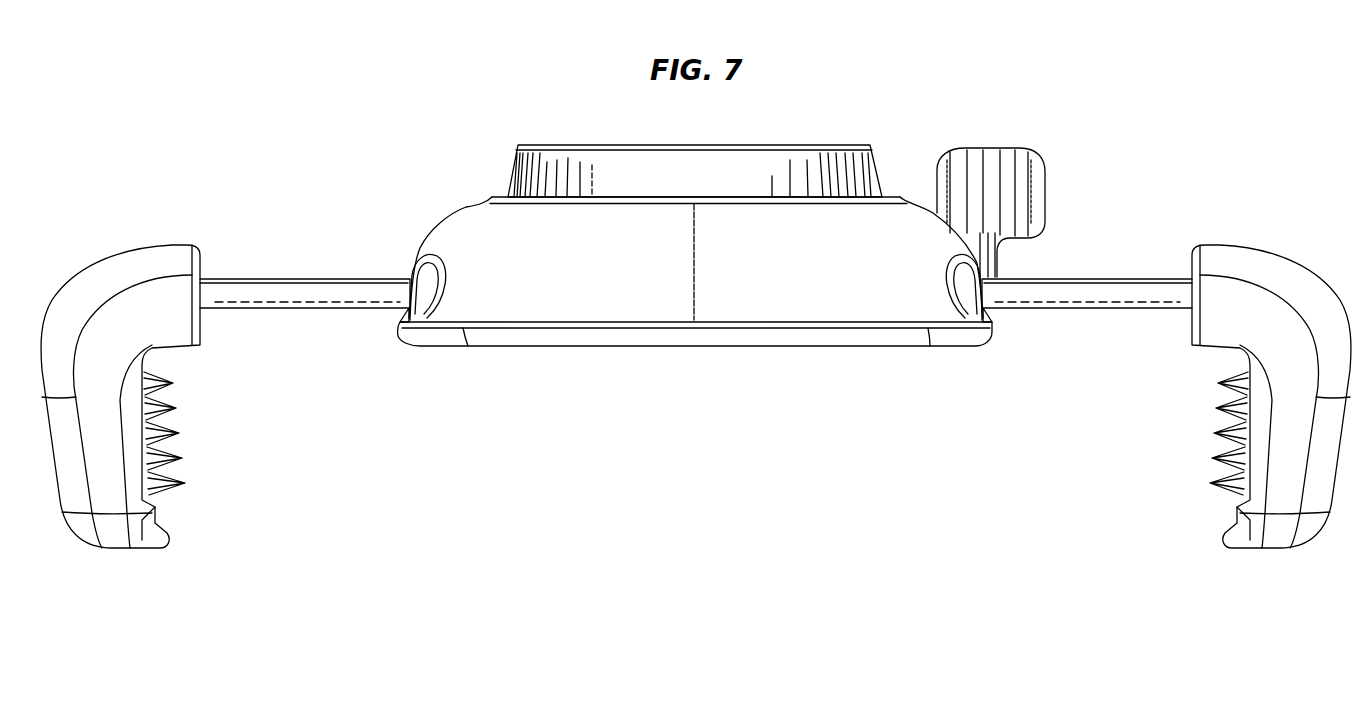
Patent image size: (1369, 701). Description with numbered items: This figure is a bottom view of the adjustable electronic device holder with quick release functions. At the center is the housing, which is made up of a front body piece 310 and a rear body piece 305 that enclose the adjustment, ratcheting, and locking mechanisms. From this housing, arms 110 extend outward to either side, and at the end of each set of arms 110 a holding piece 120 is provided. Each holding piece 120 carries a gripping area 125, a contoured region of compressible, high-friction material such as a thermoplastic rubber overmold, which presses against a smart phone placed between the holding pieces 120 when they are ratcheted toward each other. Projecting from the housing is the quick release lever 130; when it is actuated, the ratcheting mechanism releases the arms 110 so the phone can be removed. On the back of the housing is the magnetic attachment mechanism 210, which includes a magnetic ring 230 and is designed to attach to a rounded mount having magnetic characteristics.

The arms 110 is at (343, 294).
The holding piece 120 is at (1322, 298).
The gripping area 125 is at (178, 418).
The quick release lever 130 is at (1046, 203).
The magnetic attachment mechanism 210 is at (530, 174).
The magnetic ring 230 is at (597, 145).
The rear body piece 305 is at (460, 242).
The front body piece 310 is at (778, 347).